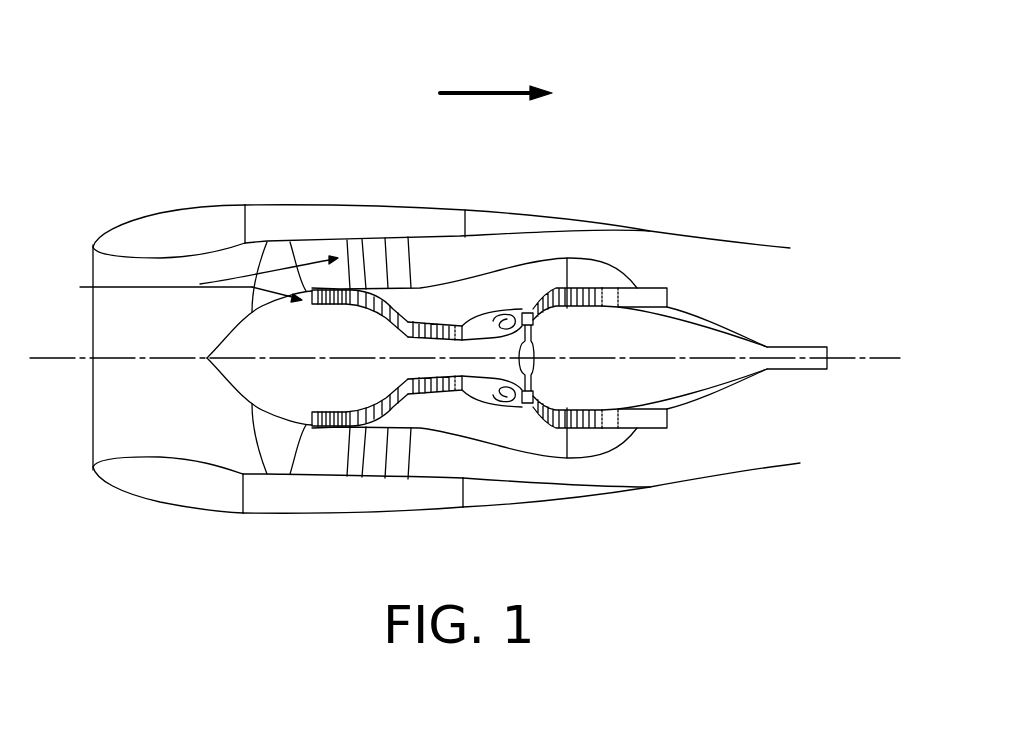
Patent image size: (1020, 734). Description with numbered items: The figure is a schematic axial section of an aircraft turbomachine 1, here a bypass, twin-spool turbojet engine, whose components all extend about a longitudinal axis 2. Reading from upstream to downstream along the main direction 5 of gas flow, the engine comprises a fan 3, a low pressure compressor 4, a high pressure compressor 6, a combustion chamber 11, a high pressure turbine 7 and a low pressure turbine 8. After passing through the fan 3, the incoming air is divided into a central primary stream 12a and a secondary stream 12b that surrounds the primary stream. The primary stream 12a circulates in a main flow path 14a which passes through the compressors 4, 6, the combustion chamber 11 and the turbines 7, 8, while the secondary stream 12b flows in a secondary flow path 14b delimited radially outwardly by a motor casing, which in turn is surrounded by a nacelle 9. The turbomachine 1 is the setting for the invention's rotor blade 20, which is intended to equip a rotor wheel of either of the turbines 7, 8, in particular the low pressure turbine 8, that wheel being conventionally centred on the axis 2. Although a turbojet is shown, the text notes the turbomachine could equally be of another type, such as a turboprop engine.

The aircraft turbomachine 1 is at (178, 124).
The longitudinal axis 2 is at (40, 352).
The fan 3 is at (270, 427).
The low pressure compressor 4 is at (332, 280).
The main direction of gas flow 5 is at (490, 92).
The high pressure compressor 6 is at (439, 314).
The high pressure turbine 7 is at (558, 284).
The low pressure turbine 8 is at (600, 283).
The nacelle 9 is at (404, 212).
The combustion chamber 11 is at (499, 314).
The primary stream 12a is at (248, 311).
The secondary stream 12b is at (302, 240).
The main flow path 14a is at (395, 395).
The secondary flow path 14b is at (492, 465).
The rotor blade 20 is at (142, 262).